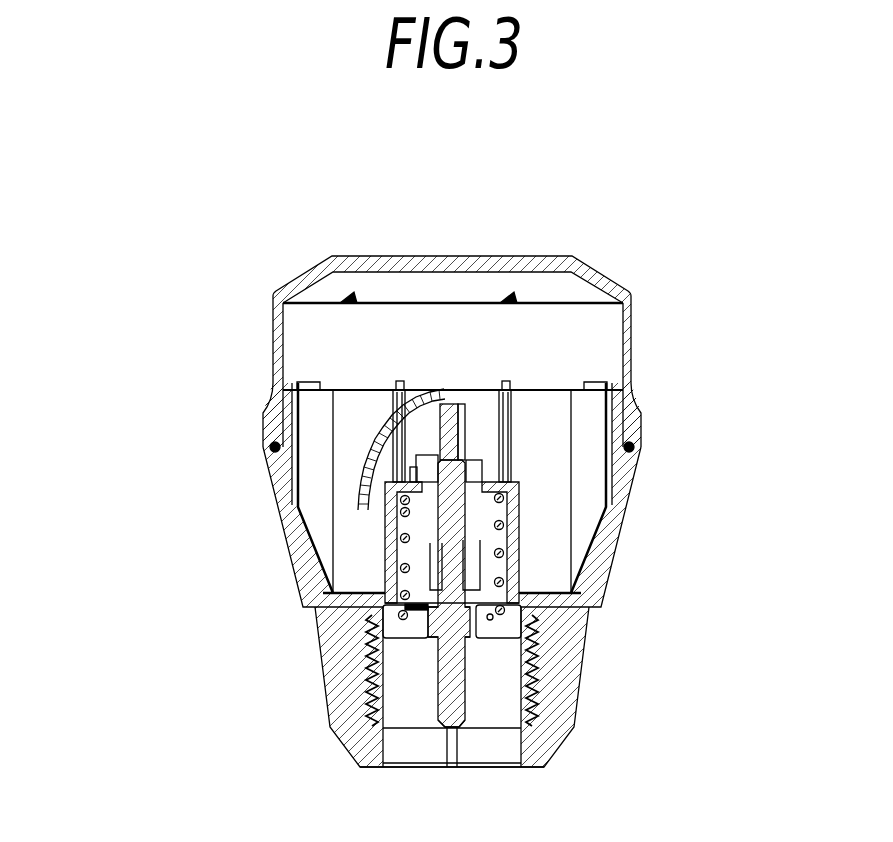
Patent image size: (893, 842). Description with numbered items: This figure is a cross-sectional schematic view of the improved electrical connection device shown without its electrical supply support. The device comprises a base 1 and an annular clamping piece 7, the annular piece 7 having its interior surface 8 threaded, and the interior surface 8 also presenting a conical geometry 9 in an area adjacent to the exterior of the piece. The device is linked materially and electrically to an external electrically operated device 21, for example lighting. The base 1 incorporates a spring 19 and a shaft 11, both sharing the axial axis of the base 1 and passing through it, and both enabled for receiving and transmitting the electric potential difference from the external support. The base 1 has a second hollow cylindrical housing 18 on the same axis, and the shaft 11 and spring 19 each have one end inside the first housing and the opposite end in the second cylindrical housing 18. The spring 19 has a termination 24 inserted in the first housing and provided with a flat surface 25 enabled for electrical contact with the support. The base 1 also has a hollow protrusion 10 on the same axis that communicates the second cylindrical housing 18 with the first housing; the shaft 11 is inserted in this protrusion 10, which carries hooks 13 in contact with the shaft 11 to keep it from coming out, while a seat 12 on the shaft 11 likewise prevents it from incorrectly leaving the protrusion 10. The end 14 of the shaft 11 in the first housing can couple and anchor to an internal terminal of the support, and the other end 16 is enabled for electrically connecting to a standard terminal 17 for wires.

The base 1 is at (283, 527).
The annular clamping piece 7 is at (332, 634).
The interior surface 8 is at (350, 678).
The conical geometry 9 is at (373, 753).
The hollow protrusion 10 is at (383, 605).
The shaft 11 is at (478, 663).
The seat 12 is at (477, 645).
The hooks 13 is at (473, 552).
The end 14 is at (473, 707).
The other end 16 is at (463, 517).
The standard terminal 17 is at (380, 418).
The second hollow cylindrical housing 18 is at (383, 525).
The spring 19 is at (510, 578).
The external electrically operated device 21 is at (270, 353).
The termination 24 is at (400, 617).
The flat surface 25 is at (487, 622).